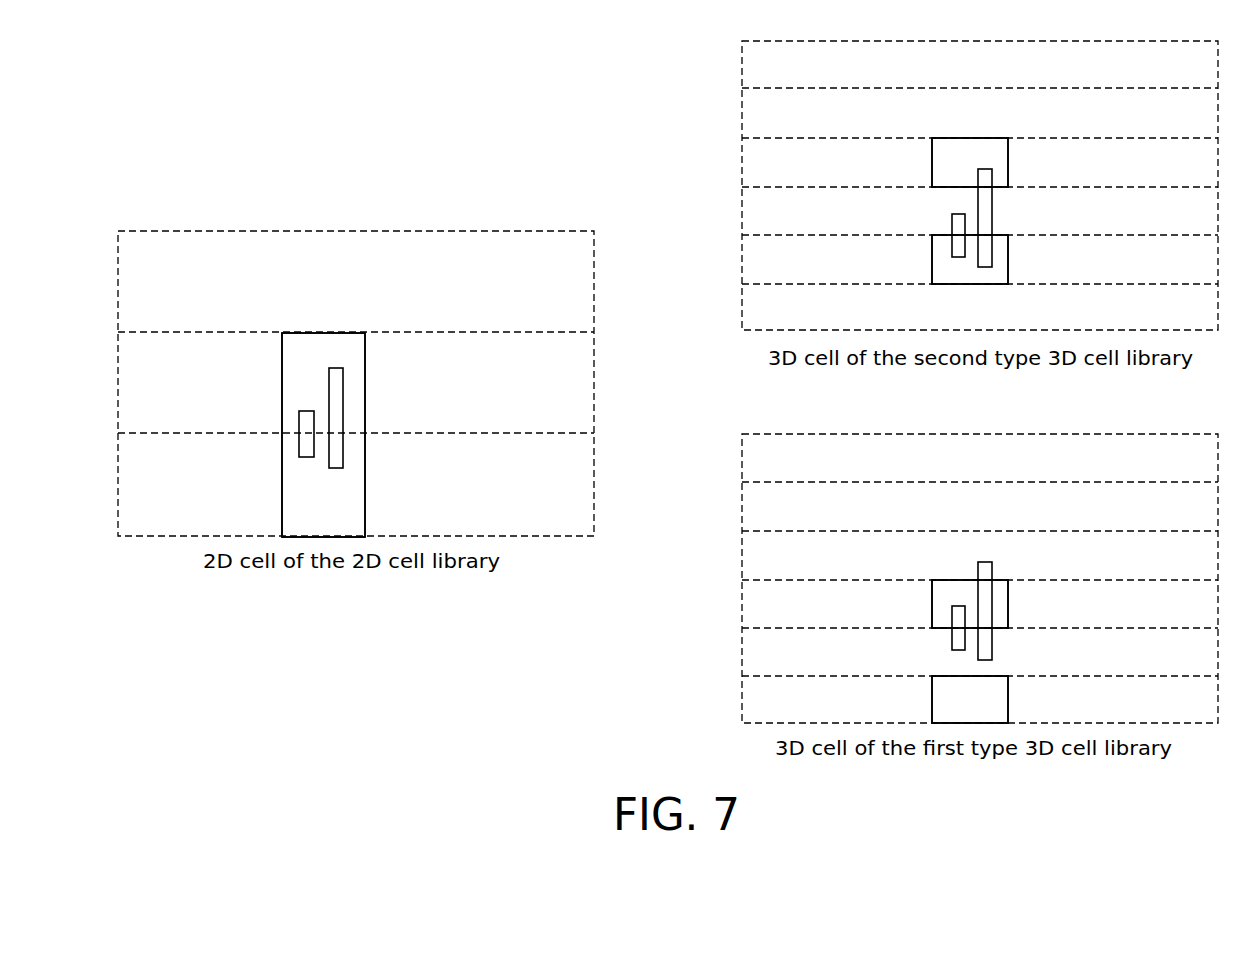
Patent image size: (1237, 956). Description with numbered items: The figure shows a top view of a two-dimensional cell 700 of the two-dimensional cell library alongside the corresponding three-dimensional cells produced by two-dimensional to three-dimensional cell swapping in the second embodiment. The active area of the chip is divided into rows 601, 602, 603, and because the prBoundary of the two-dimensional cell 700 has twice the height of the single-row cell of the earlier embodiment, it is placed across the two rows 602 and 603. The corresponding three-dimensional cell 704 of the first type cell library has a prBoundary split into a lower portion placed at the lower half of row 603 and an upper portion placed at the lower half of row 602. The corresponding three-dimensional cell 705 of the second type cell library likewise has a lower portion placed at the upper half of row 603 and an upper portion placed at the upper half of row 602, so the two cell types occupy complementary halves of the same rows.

The row 601 is at (356, 281).
The row 602 is at (356, 382).
The row 603 is at (356, 484).
The 2D cell 700 is at (347, 435).
The 3D cell of the second type 3D cell library 705 is at (1015, 138).
The 3D cell of the first type 3D cell library 704 is at (1015, 580).